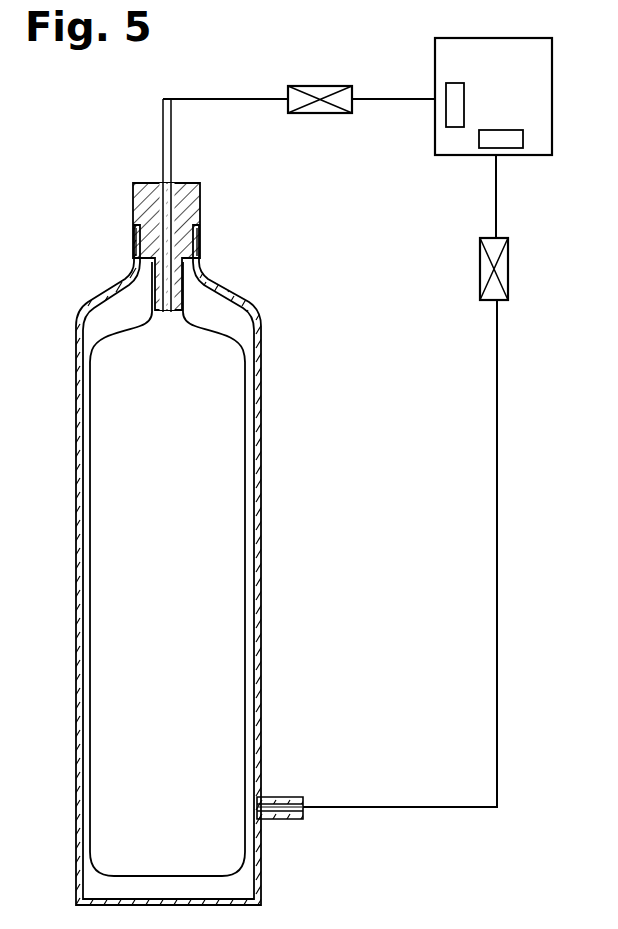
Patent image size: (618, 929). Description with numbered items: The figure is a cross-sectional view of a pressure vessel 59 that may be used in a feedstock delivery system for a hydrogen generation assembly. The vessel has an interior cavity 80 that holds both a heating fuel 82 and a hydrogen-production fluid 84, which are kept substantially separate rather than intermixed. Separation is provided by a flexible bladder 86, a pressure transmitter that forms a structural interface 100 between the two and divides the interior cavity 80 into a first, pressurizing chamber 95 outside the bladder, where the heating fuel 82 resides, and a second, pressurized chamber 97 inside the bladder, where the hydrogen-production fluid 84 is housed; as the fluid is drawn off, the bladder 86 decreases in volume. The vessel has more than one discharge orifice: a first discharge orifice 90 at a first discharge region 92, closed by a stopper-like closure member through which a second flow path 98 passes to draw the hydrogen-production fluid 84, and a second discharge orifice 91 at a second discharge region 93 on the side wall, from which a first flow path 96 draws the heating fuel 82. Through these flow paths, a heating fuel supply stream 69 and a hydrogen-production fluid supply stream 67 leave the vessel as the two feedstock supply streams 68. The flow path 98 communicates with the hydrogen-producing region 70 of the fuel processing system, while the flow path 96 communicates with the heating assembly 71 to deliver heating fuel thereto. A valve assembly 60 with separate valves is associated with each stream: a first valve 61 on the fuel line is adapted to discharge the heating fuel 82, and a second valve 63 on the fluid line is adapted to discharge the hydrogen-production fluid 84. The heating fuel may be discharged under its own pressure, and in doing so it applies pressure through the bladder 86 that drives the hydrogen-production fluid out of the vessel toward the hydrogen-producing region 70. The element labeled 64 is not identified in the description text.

The pressure vessel 59 is at (266, 538).
The valve assembly 60 is at (455, 245).
The first valve 61 is at (480, 270).
The second valve 63 is at (303, 86).
The controller 64 is at (493, 36).
The hydrogen-production fluid supply stream 67 is at (216, 96).
The feedstock supply streams 68 is at (251, 95).
The heating fuel supply stream 69 is at (492, 367).
The hydrogen-producing region 70 is at (453, 83).
The heating assembly 71 is at (485, 130).
The interior cavity 80 is at (104, 328).
The heating fuel 82 is at (496, 532).
The hydrogen-production fluid 84 is at (258, 100).
The bladder 86 is at (230, 338).
The discharge orifice 90 is at (150, 248).
The second discharge orifice 91 is at (290, 796).
The first discharge region 92 is at (117, 210).
The second discharge region 93 is at (273, 827).
The first chamber 95 is at (137, 318).
The first flow path 96 is at (304, 805).
The second chamber 97 is at (186, 645).
The second flow path 98 is at (172, 140).
The interface 100 is at (97, 871).